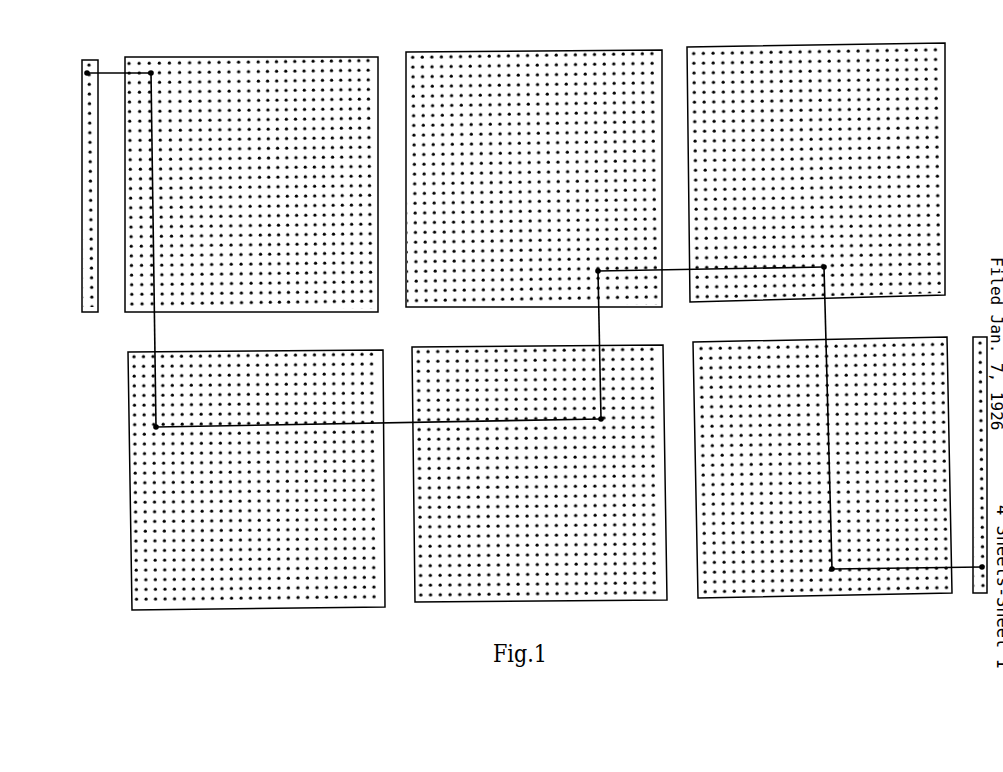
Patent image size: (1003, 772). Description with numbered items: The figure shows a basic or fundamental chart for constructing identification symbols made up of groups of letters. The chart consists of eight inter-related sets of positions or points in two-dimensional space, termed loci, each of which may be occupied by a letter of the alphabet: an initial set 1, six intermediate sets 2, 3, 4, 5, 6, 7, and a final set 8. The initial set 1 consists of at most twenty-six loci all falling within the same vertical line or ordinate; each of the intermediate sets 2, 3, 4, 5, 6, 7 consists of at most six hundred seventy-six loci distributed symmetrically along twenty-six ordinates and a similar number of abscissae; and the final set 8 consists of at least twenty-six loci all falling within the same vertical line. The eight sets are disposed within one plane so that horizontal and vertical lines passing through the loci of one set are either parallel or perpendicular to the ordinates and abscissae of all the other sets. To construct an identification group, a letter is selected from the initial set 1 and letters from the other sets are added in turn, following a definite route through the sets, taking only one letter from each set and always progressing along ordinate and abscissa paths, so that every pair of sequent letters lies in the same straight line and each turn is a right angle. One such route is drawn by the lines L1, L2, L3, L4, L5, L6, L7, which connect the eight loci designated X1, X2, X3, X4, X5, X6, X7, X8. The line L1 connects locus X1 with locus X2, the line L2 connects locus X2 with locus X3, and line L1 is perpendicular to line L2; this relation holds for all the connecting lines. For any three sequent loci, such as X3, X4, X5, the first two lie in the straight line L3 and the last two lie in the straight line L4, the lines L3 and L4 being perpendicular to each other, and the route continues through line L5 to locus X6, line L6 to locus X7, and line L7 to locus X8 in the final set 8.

The initial set 1 is at (82, 167).
The intermediate set 2 is at (282, 57).
The intermediate set 3 is at (280, 610).
The intermediate set 4 is at (558, 602).
The intermediate set 5 is at (545, 52).
The intermediate set 6 is at (847, 47).
The intermediate set 7 is at (803, 594).
The final set 8 is at (975, 338).
The line L1 is at (108, 72).
The line L2 is at (156, 331).
The line L3 is at (397, 424).
The line L4 is at (598, 334).
The line L5 is at (680, 275).
The line L6 is at (822, 321).
The line L7 is at (965, 573).
The locus X1 is at (87, 73).
The locus X2 is at (150, 68).
The locus X3 is at (156, 427).
The locus X4 is at (585, 419).
The locus X5 is at (606, 271).
The locus X6 is at (835, 267).
The locus X7 is at (840, 570).
The locus X8 is at (982, 565).